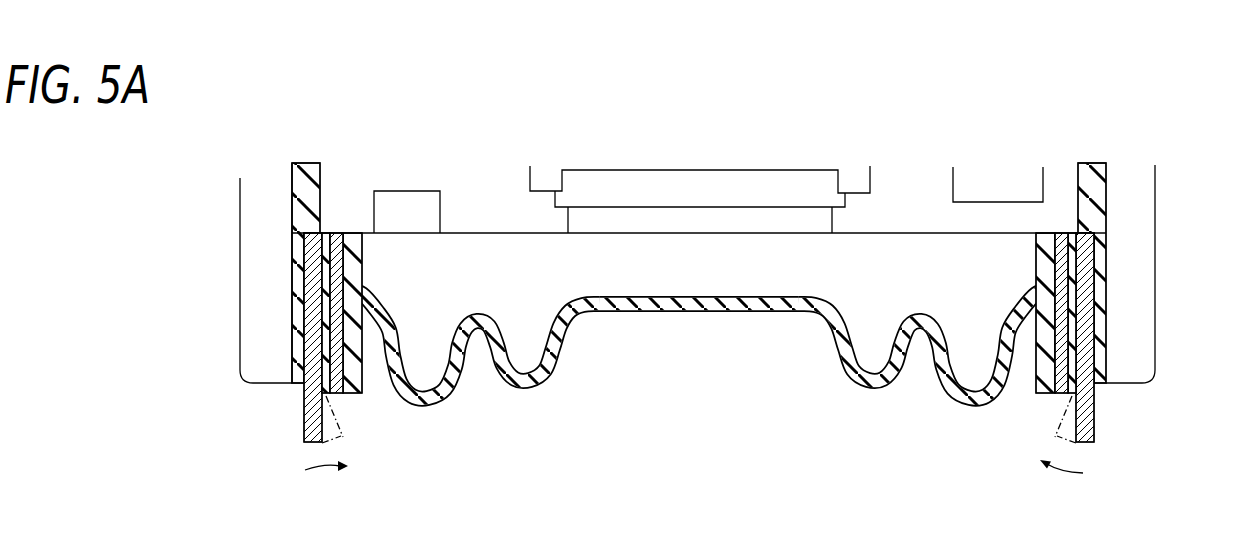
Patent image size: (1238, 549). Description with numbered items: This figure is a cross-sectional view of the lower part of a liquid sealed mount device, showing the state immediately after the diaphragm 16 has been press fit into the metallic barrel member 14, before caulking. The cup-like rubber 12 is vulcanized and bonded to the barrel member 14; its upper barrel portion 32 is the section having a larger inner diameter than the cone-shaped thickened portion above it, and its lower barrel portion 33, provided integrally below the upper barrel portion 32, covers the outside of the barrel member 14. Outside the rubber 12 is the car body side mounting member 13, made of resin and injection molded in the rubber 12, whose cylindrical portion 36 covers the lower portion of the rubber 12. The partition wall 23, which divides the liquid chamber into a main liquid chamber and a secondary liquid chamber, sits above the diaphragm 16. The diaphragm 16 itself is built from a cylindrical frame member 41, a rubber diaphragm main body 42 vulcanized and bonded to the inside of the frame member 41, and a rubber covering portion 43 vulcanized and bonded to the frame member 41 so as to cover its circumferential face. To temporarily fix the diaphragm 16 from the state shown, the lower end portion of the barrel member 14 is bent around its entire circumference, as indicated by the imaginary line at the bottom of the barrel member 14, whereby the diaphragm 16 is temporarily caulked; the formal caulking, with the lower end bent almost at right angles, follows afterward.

The rubber 12 is at (284, 164).
The car body side mounting member 13 is at (1168, 245).
The barrel member 14 is at (304, 412).
The diaphragm 16 is at (692, 320).
The partition wall 23 is at (768, 233).
The upper barrel portion 32 is at (292, 208).
The lower barrel portion 33 is at (292, 292).
The cylindrical portion 36 is at (1155, 303).
The frame member 41 is at (334, 233).
The diaphragm main body 42 is at (558, 367).
The rubber covering portion 43 is at (325, 233).